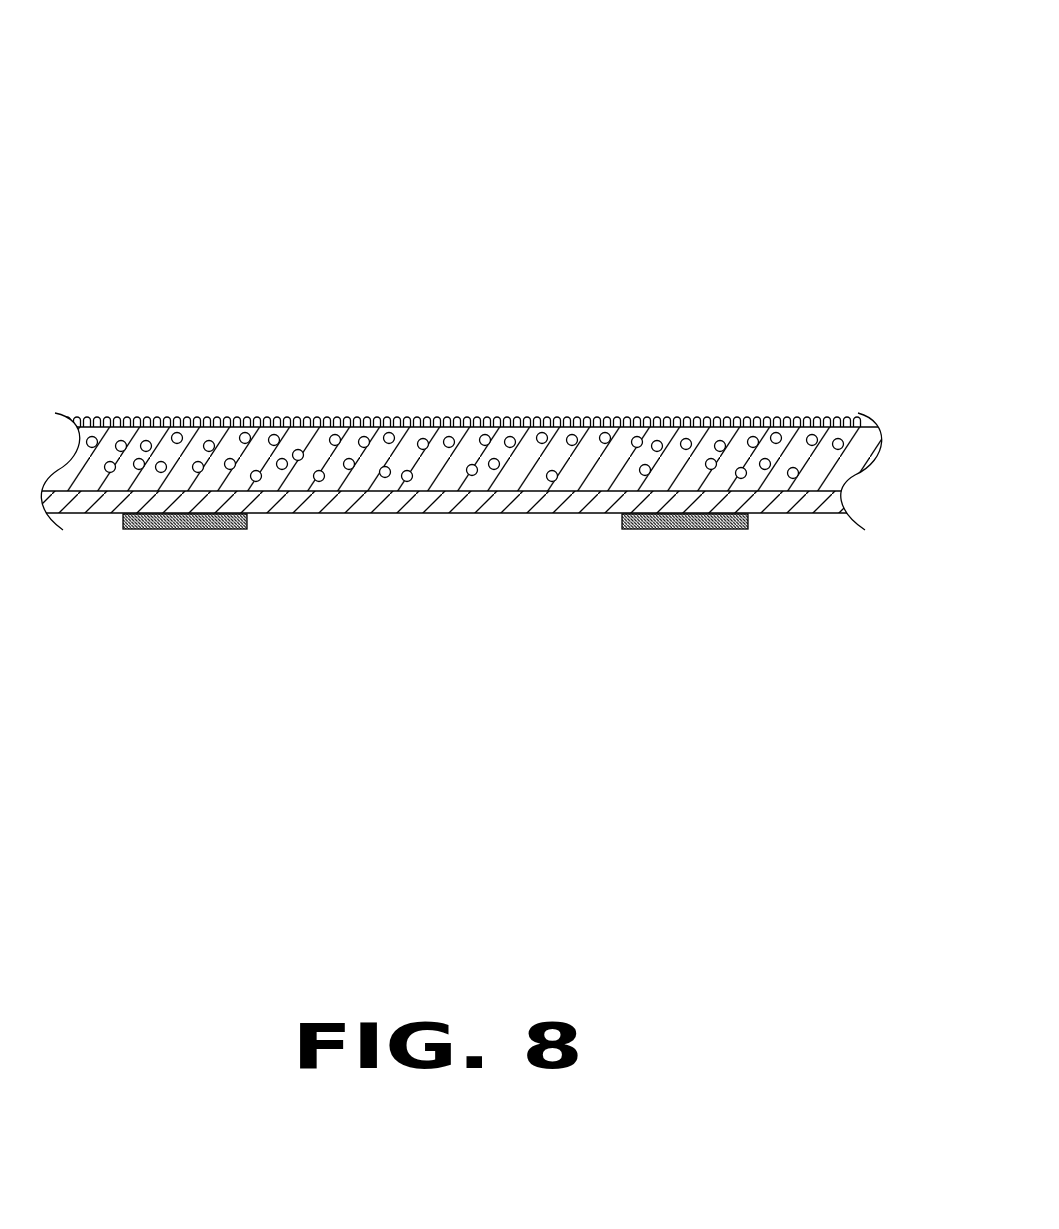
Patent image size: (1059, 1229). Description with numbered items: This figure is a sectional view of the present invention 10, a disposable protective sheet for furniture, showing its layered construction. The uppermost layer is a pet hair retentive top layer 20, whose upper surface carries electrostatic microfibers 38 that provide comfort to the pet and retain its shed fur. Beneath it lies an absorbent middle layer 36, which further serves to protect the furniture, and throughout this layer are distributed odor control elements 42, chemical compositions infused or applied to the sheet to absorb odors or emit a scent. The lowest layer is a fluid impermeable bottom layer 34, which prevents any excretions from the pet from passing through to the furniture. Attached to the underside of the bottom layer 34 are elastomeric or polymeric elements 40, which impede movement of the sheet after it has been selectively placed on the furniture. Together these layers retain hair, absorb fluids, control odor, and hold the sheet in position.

The present invention 10 is at (681, 213).
The pet hair retentive top layer 20 is at (219, 427).
The electrostatic microfibers 38 is at (325, 427).
The absorbent middle layer 36 is at (473, 447).
The odor control elements 42 is at (300, 460).
The fluid impermeable bottom layer 34 is at (466, 512).
The elastomeric or polymeric elements 40 is at (176, 529).